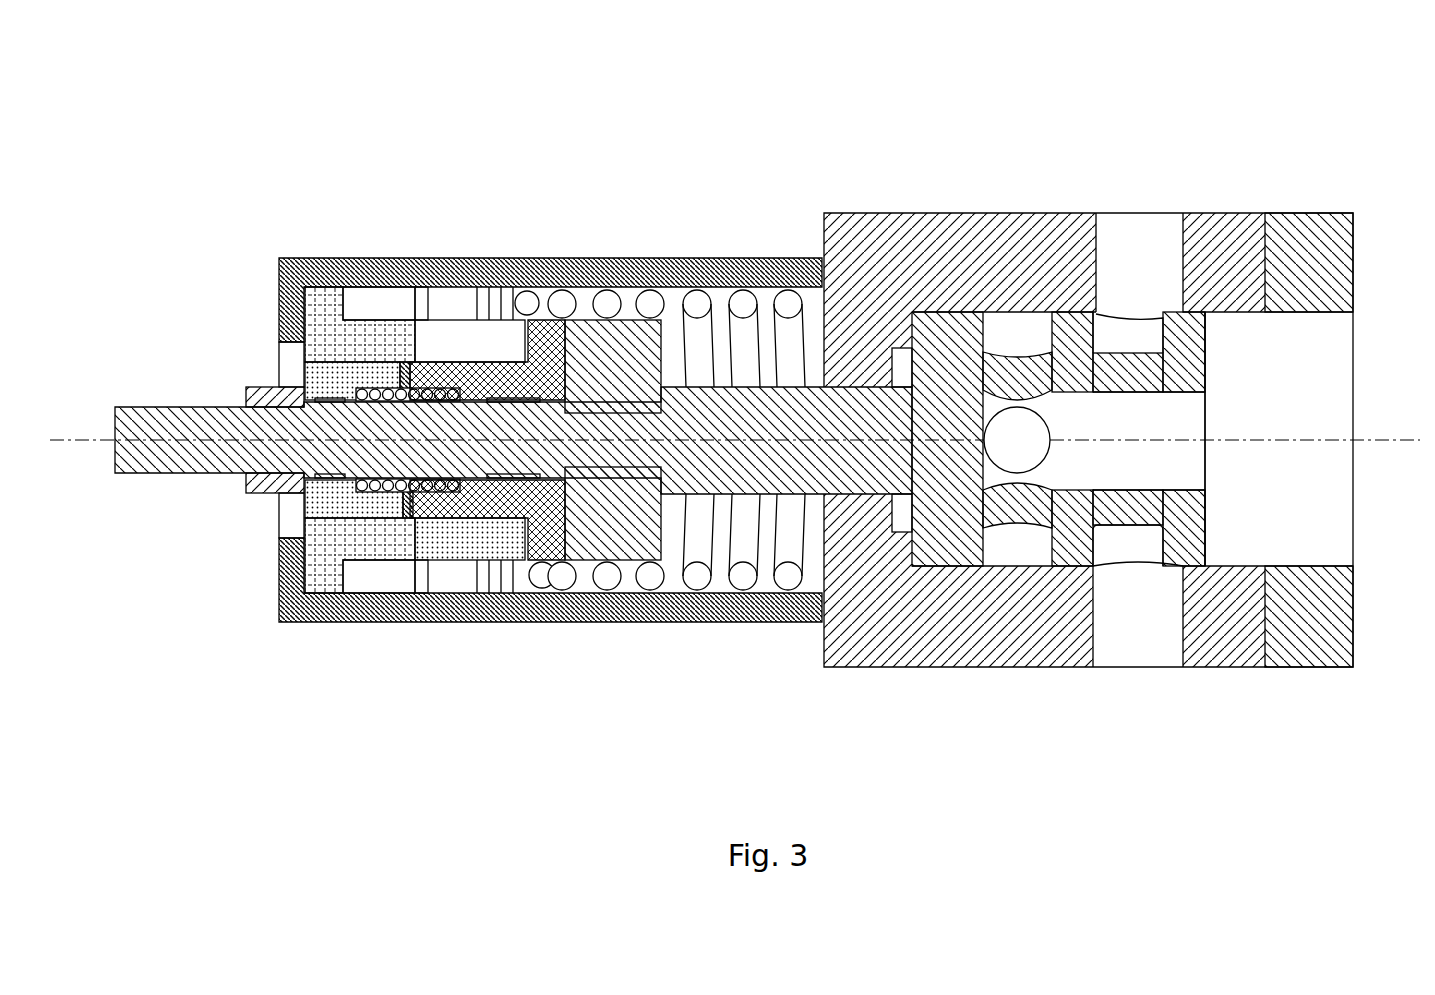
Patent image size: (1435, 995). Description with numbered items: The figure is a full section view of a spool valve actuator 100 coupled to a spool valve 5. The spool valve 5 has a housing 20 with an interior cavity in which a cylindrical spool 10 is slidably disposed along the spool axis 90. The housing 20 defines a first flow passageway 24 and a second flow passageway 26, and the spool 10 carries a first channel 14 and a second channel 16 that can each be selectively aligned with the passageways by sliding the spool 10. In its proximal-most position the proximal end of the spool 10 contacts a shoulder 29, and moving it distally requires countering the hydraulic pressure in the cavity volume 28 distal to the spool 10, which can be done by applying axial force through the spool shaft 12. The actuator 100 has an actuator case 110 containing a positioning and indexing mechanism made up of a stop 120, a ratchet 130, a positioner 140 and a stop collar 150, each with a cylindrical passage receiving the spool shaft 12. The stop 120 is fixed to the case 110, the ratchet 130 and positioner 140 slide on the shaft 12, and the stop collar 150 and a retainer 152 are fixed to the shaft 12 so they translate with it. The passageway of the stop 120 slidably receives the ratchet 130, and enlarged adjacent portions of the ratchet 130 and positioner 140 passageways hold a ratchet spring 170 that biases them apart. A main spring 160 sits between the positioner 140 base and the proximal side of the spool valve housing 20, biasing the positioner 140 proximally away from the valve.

The spool valve 5 is at (815, 138).
The spool 10 is at (1205, 352).
The spool shaft 12 is at (177, 405).
The first channel 14 is at (1128, 439).
The second channel 16 is at (1017, 454).
The housing 20 is at (857, 668).
The first flow passageway 24 is at (1142, 660).
The second flow passageway 26 is at (1135, 238).
The cavity volume 28 is at (1278, 515).
The shoulder 29 is at (915, 333).
The spool axis 90 is at (78, 443).
The spool valve actuator 100 is at (305, 138).
The actuator case 110 is at (312, 623).
The stop 120 is at (370, 572).
The ratchet 130 is at (345, 362).
The positioner 140 is at (527, 320).
The stop collar 150 is at (620, 318).
The retainer 152 is at (250, 494).
The main spring 160 is at (741, 292).
The ratchet spring 170 is at (442, 384).